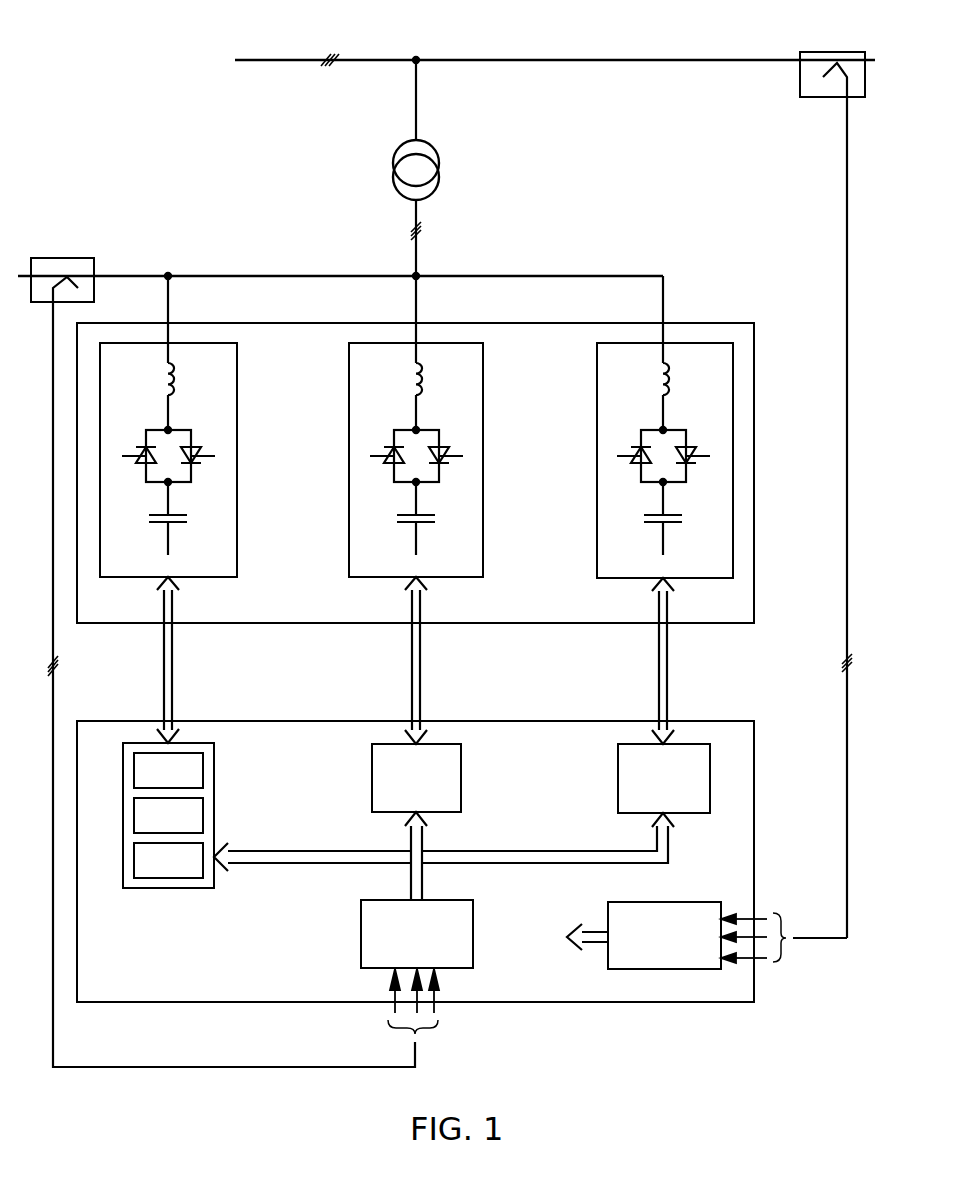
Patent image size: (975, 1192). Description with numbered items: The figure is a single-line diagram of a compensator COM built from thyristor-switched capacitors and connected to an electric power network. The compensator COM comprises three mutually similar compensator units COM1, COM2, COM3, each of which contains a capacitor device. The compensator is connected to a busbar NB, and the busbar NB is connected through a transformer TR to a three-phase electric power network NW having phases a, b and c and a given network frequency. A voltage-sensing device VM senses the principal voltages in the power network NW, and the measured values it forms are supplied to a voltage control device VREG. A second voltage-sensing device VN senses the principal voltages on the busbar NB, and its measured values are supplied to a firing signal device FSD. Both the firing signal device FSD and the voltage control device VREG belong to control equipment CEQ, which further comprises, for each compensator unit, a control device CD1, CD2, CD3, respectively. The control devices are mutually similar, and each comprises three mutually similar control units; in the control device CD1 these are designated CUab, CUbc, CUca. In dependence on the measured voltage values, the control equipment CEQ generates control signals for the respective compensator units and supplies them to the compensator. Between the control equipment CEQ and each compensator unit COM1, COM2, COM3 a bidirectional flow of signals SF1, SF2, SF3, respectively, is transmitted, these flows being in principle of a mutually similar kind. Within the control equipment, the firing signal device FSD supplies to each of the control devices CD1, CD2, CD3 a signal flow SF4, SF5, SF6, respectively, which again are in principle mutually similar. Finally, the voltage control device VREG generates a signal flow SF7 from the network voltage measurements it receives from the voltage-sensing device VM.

The three-phase electric power network NW is at (383, 60).
The transformer TR is at (425, 140).
The voltage-sensing device VM is at (838, 52).
The busbar NB is at (345, 276).
The voltage-sensing device VN is at (70, 258).
The compensator COM is at (735, 626).
The compensator unit COM1 is at (220, 340).
The compensator unit COM2 is at (467, 343).
The compensator unit COM3 is at (610, 583).
The bidirectional flow of signals SF1 is at (185, 660).
The bidirectional flow of signals SF2 is at (433, 660).
The bidirectional flow of signals SF3 is at (680, 661).
The signal flow SF4 is at (312, 849).
The signal flow SF5 is at (423, 840).
The signal flow SF6 is at (548, 838).
The signal flow SF7 is at (565, 937).
The control equipment CEQ is at (633, 1003).
The control device CD1 is at (208, 815).
The control device CD2 is at (420, 809).
The control device CD3 is at (666, 810).
The control unit CUab is at (199, 784).
The control unit CUbc is at (199, 829).
The control unit CUca is at (199, 874).
The firing signal device FSD is at (413, 965).
The voltage control device VREG is at (684, 965).